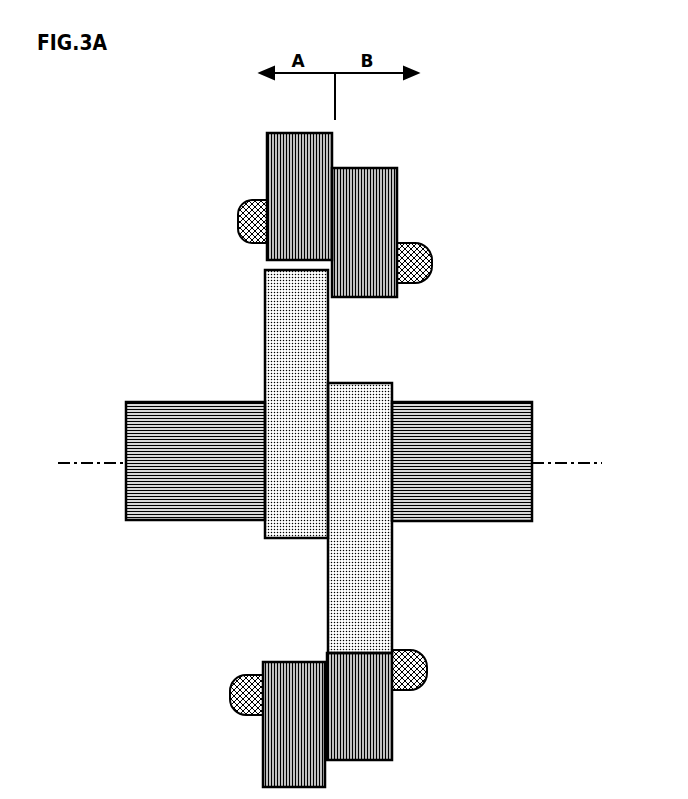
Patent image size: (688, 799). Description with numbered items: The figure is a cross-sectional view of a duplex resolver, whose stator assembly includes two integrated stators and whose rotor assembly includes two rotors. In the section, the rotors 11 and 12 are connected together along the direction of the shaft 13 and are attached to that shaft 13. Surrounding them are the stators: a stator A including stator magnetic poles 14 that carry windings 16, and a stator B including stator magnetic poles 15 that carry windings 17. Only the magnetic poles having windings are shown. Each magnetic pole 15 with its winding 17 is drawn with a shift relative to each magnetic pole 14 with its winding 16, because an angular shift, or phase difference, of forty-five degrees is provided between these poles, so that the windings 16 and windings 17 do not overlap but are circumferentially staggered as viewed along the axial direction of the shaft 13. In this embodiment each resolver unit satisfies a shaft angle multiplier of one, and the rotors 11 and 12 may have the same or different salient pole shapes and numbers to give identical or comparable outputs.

The rotor 11 is at (263, 360).
The rotor 12 is at (392, 565).
The shaft 13 is at (440, 402).
The stator magnetic pole 14 is at (272, 133).
The stator magnetic pole 15 is at (390, 168).
The winding 16 is at (243, 202).
The winding 17 is at (422, 243).